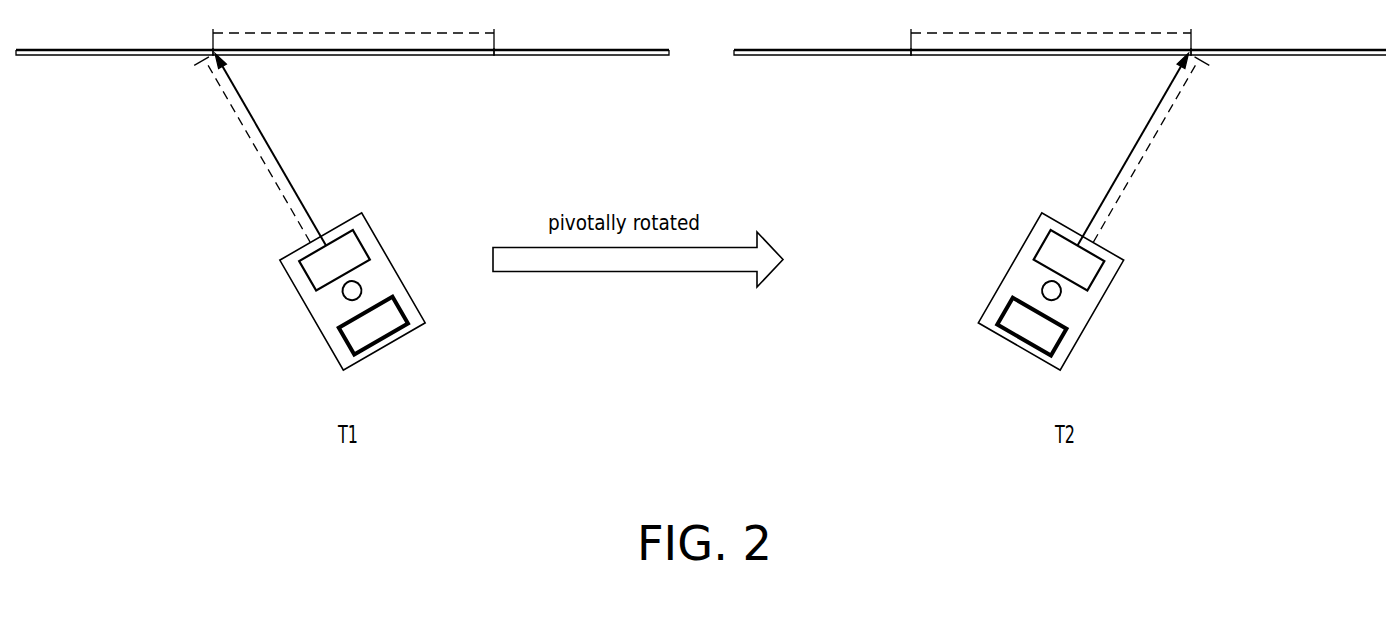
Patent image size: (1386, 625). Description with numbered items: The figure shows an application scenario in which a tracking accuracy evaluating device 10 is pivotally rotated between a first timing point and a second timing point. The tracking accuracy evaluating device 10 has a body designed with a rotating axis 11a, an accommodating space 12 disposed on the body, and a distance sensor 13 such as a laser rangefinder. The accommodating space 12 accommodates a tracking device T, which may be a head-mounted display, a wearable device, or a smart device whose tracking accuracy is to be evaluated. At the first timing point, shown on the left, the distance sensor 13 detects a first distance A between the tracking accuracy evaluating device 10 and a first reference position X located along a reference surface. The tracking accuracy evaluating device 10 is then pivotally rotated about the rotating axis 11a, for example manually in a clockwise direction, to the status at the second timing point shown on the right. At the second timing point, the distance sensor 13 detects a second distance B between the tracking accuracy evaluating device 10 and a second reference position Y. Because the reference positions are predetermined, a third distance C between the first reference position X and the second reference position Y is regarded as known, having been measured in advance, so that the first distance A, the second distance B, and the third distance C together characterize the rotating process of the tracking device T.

The tracking accuracy evaluating device 10 is at (321, 333).
The rotating axis 11a is at (341, 294).
The accommodating space 12 is at (345, 350).
The distance sensor 13 is at (303, 278).
The tracking device T is at (392, 326).
The first distance A is at (254, 152).
The second distance B is at (1149, 152).
The third distance C is at (702, 32).
The first reference position X is at (562, 67).
The second reference position Y is at (832, 67).